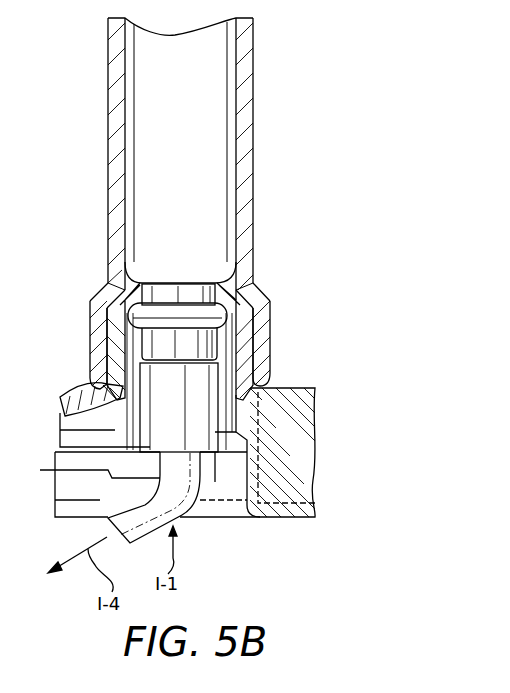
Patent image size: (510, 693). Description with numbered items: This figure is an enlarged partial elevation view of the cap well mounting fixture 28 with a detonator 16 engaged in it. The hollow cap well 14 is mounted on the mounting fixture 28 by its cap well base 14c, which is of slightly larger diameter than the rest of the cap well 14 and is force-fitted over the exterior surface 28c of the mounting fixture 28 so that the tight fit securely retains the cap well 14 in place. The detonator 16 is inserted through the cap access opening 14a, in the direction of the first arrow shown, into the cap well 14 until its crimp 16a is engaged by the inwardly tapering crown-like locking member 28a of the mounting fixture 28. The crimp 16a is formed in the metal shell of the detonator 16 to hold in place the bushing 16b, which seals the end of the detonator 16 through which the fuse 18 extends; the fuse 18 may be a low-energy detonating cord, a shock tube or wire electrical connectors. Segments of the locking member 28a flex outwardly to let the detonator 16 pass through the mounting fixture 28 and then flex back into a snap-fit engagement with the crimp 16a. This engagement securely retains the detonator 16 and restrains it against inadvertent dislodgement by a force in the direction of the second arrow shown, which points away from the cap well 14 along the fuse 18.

The cap well 14 is at (108, 103).
The detonator 16 is at (158, 130).
The cap well base 14c is at (88, 318).
The cap well mounting fixture 28 is at (262, 337).
The locking member 28a is at (110, 283).
The exterior surface 28c is at (90, 357).
The crimp 16a is at (188, 292).
The bushing 16b is at (200, 402).
The fuse 18 is at (58, 472).
The cap access opening 14a is at (228, 484).